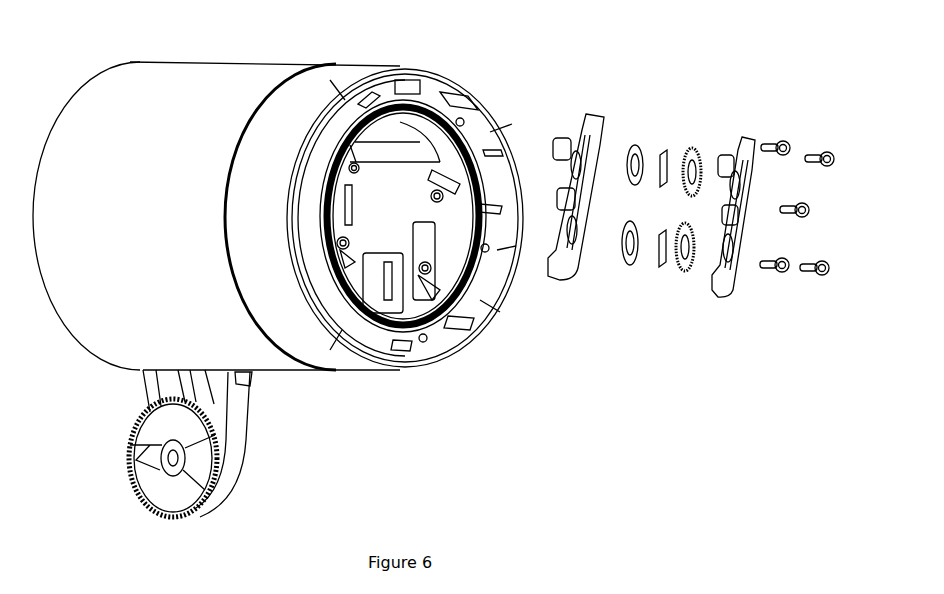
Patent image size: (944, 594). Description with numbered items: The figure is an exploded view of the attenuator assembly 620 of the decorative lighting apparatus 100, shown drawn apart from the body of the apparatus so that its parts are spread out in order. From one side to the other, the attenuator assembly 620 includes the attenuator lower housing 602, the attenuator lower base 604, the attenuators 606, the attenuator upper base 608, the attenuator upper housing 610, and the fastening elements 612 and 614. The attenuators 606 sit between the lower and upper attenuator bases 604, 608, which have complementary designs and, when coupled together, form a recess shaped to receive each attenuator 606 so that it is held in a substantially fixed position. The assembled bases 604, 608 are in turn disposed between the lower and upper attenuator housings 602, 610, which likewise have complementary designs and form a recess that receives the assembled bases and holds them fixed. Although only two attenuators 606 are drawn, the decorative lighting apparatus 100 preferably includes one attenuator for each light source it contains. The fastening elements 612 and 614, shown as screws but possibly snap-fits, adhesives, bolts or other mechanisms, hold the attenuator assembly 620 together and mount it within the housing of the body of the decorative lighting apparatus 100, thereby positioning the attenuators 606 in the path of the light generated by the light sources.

The decorative lighting apparatus 100 is at (480, 335).
The attenuator lower housing 602 is at (557, 283).
The attenuator lower base 604 is at (628, 266).
The attenuators 606 is at (663, 268).
The attenuator upper base 608 is at (686, 272).
The attenuator upper housing 610 is at (726, 298).
The fastening elements 612 is at (790, 140).
The fastening element 614 is at (812, 215).
The attenuator assembly 620 is at (903, 73).